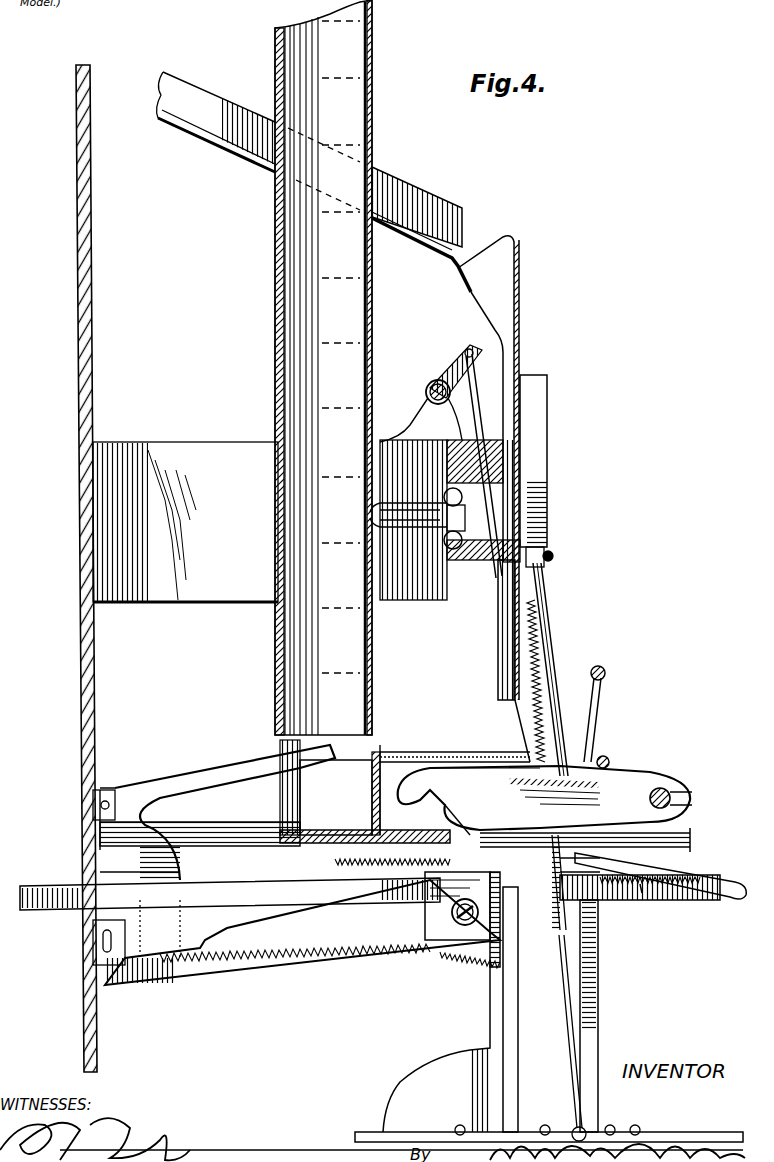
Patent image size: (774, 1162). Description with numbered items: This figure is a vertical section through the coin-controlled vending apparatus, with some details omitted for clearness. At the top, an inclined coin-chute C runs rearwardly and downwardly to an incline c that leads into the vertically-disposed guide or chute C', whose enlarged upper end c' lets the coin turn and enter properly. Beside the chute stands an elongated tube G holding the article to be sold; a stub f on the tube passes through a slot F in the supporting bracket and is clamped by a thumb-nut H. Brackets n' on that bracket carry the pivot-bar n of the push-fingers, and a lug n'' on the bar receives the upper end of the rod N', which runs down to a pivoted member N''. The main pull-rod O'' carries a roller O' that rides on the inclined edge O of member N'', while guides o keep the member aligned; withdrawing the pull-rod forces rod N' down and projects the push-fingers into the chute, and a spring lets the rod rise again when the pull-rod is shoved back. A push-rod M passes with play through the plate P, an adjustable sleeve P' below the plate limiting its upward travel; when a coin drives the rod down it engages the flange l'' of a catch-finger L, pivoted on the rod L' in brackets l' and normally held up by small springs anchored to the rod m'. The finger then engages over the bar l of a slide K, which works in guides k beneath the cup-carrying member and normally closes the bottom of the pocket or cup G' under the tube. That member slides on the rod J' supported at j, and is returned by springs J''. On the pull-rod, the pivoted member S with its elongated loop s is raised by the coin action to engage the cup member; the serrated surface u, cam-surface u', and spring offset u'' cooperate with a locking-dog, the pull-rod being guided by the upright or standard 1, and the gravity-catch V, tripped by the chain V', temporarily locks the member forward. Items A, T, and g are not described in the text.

The back board A is at (79, 283).
The inclined coin-chute C is at (309, 161).
The tube G is at (342, 367).
The incline c is at (425, 255).
The enlarged upper end c' is at (489, 414).
The vertical guide or chute C' is at (512, 468).
The bracket n' is at (447, 472).
The pivot-bar n is at (431, 381).
The lug or projection n'' is at (454, 349).
The rod N' is at (518, 722).
The thumb-nut H is at (460, 512).
The stub f is at (416, 530).
The plate P is at (544, 539).
The adjustable sleeve P' is at (557, 566).
The push-rod M is at (552, 632).
The handle T is at (605, 688).
The catch-finger L is at (544, 798).
The rod L' is at (682, 795).
The rod m' is at (620, 754).
The flange l'' is at (485, 779).
The bar l is at (451, 816).
The bracket l' is at (593, 845).
The serrated upper surface u is at (660, 892).
The cam-surface u' is at (650, 874).
The offset portion u'' is at (596, 860).
The elongated loop portion s is at (652, 893).
The pivoted member S is at (640, 1003).
The support 1 is at (599, 977).
The inclined edge O is at (454, 906).
The roller O' is at (457, 921).
The guide o is at (490, 960).
The main pull-rod O'' is at (230, 907).
The pivoted member N'' is at (295, 934).
The gravity-catch V is at (214, 806).
The rod J' is at (200, 841).
The spring J'' is at (330, 787).
The pocket or cup G' is at (452, 781).
The plate g is at (438, 757).
The slide or false bottom K is at (365, 851).
The guide k is at (390, 866).
The rod support j is at (98, 855).
The chain or flexible connection V' is at (302, 939).
The slot F is at (185, 522).